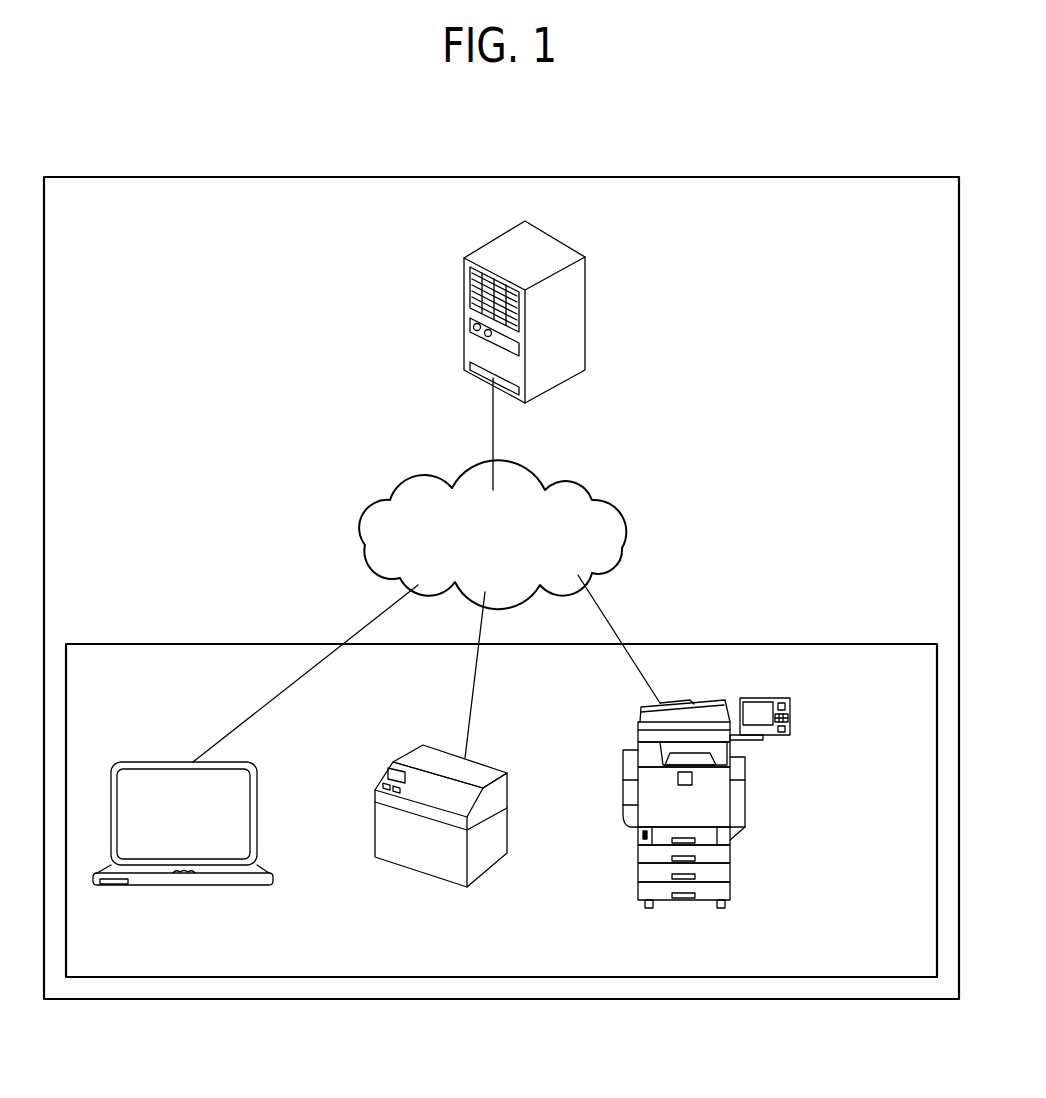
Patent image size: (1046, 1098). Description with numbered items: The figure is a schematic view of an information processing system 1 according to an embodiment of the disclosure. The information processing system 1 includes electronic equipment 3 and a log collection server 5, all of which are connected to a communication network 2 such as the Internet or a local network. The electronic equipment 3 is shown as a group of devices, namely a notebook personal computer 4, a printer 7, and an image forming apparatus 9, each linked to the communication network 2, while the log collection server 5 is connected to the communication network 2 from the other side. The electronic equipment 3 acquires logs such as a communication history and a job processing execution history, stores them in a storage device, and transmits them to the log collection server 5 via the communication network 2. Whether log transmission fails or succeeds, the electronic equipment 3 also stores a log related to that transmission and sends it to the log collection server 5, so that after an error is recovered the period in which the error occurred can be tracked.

The information processing system 1 is at (857, 176).
The communication network 2 is at (588, 485).
The electronic equipment 3 is at (833, 643).
The notebook personal computer 4 is at (232, 762).
The log collection server 5 is at (555, 235).
The printer 7 is at (483, 763).
The image forming apparatus 9 is at (765, 697).